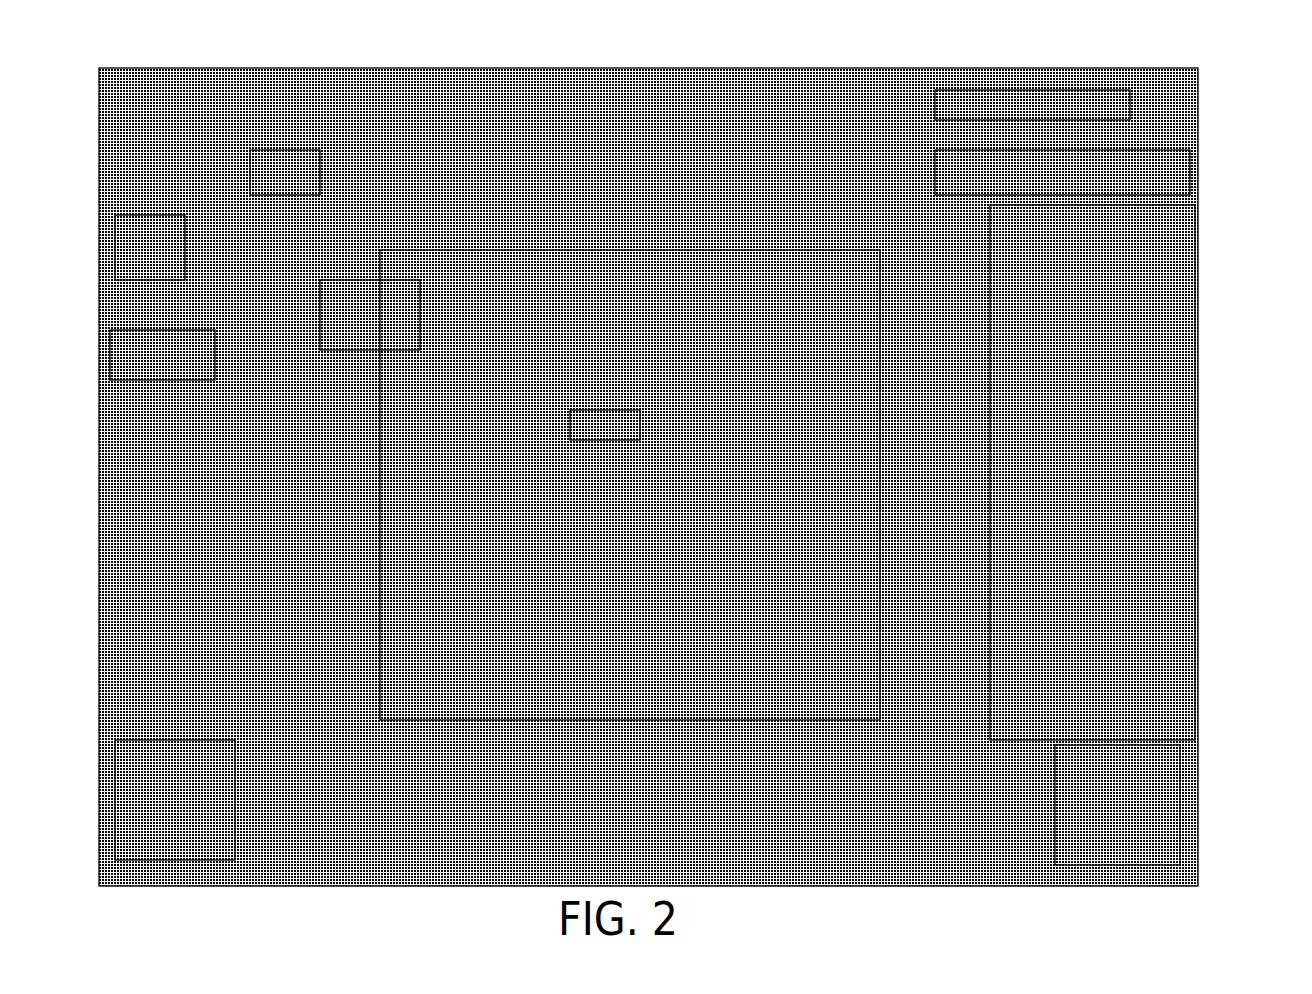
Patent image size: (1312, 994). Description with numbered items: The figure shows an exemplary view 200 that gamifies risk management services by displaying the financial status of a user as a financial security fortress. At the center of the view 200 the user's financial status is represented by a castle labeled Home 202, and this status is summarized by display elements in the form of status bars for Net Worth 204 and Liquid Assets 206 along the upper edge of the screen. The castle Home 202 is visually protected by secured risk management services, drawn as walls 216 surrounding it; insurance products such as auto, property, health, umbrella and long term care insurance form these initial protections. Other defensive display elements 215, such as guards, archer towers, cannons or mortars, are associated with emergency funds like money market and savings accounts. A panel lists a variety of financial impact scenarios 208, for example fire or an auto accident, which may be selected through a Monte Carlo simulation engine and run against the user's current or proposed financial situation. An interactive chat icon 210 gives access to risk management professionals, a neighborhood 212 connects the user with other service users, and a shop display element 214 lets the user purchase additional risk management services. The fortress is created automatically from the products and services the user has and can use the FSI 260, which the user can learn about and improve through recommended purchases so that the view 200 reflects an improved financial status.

The view 200 is at (1215, 98).
The home location indicator 202 is at (585, 430).
The Net Worth status bar 204 is at (1020, 107).
The Liquid Assets status bar 206 is at (905, 208).
The financial impact scenarios 208 is at (1157, 233).
The interactive chat icon 210 is at (185, 330).
The neighborhood 212 is at (235, 750).
The shop display element 214 is at (965, 840).
The defensive display elements 215 is at (350, 303).
The walls 216 is at (805, 415).
The FSI 260 is at (335, 167).